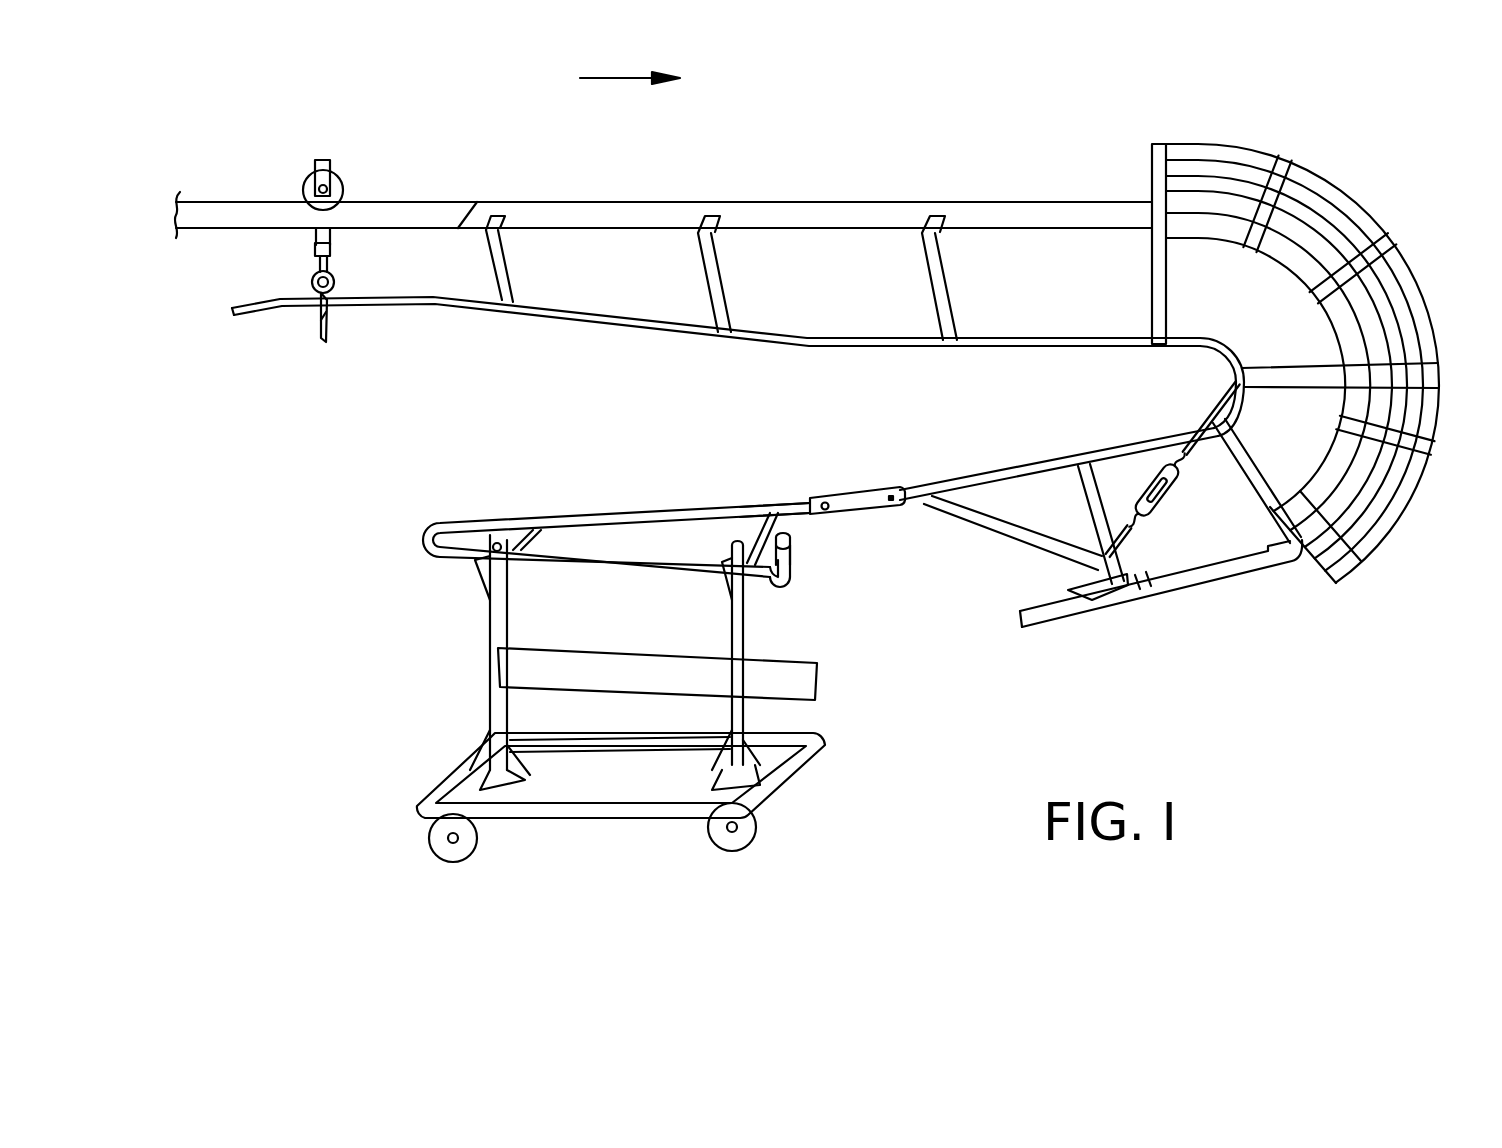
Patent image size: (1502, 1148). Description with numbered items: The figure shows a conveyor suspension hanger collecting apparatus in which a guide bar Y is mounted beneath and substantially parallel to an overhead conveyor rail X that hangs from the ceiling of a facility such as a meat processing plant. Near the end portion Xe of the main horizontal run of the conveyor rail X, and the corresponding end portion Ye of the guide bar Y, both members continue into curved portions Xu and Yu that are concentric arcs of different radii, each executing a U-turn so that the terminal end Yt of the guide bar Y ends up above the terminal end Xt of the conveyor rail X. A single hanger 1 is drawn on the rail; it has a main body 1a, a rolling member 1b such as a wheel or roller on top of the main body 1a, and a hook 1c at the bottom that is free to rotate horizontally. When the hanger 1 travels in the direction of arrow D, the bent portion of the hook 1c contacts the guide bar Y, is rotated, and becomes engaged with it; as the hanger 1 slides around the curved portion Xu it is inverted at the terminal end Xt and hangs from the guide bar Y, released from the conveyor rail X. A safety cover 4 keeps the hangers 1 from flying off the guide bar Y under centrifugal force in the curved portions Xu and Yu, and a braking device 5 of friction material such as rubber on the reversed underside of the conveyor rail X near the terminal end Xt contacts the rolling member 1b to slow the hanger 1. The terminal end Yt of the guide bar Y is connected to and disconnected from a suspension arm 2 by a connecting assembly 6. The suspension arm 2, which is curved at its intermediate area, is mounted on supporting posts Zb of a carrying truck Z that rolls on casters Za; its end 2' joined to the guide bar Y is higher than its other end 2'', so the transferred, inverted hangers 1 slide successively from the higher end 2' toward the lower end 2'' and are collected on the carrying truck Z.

The hanger 1 is at (296, 156).
The main body 1a is at (316, 238).
The rolling member 1b is at (343, 182).
The hook 1c is at (322, 336).
The suspension arm 2 is at (616, 537).
The suspension arm end 2' is at (780, 477).
The suspension arm end 2'' is at (804, 560).
The safety cover 4 is at (1300, 178).
The braking device 5 is at (1140, 598).
The connecting assembly 6 is at (858, 498).
The direction of hanger movement D is at (614, 80).
The conveyor rail X is at (615, 200).
The end portion of conveyor rail Xe is at (1110, 210).
The curved portion of conveyor rail Xu is at (1388, 347).
The terminal end of conveyor rail Xt is at (1304, 552).
The guide bar Y is at (598, 320).
The end portion of guide bar Ye is at (1142, 346).
The curved portion of guide bar Yu is at (1232, 360).
The terminal end of guide bar Yt is at (930, 490).
The carrying truck Z is at (418, 760).
The casters Za is at (453, 863).
The supporting posts Zb is at (492, 690).